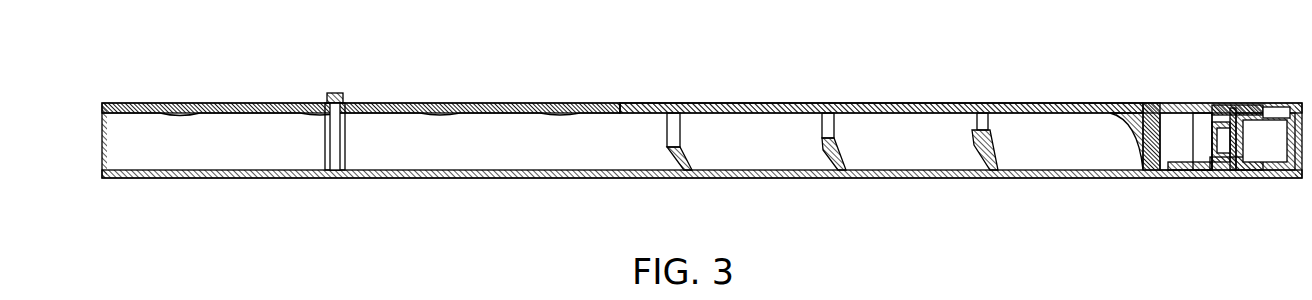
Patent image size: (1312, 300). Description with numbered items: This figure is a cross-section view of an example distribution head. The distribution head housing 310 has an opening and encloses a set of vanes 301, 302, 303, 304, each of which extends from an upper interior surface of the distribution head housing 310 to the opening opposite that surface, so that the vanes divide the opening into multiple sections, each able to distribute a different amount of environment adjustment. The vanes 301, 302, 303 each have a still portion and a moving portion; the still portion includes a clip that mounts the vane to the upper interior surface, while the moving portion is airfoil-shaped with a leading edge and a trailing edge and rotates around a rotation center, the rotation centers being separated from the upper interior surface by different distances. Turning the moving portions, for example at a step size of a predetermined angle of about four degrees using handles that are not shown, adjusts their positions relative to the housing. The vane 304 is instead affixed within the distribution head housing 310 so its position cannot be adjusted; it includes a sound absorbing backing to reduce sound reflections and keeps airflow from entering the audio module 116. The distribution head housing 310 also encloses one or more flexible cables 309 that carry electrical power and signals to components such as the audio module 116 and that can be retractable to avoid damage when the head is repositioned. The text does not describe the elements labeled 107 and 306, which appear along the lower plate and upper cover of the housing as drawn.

The bottom plate 107 is at (943, 175).
The audio module 116 is at (1168, 140).
The vane 301 is at (690, 160).
The vane 302 is at (843, 152).
The vane 303 is at (997, 152).
The vane 304 is at (1130, 130).
The housing cover 306 is at (888, 113).
The cables 309 is at (423, 105).
The distribution head housing 310 is at (743, 103).